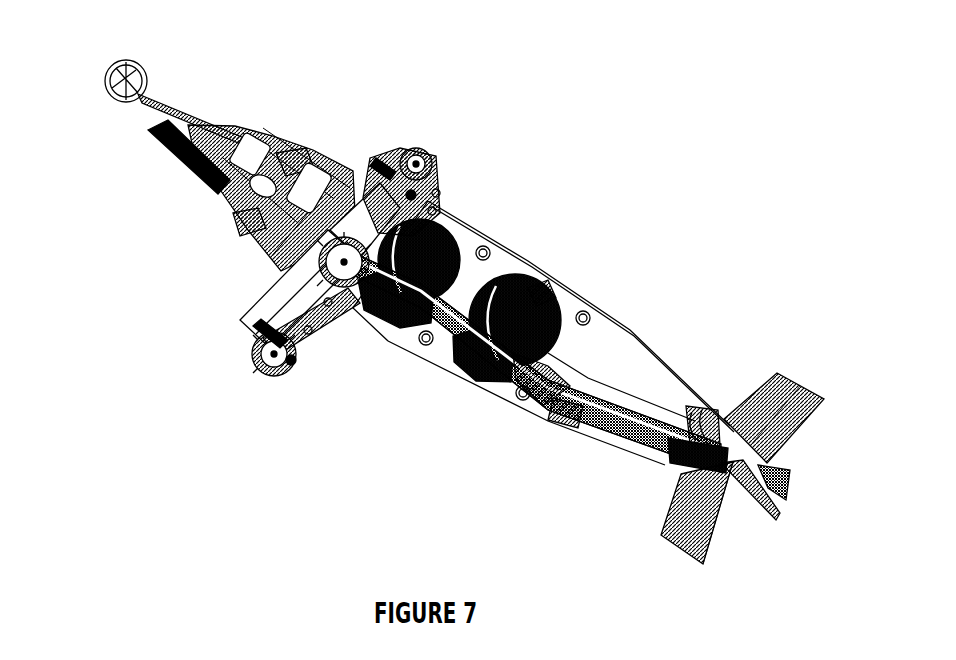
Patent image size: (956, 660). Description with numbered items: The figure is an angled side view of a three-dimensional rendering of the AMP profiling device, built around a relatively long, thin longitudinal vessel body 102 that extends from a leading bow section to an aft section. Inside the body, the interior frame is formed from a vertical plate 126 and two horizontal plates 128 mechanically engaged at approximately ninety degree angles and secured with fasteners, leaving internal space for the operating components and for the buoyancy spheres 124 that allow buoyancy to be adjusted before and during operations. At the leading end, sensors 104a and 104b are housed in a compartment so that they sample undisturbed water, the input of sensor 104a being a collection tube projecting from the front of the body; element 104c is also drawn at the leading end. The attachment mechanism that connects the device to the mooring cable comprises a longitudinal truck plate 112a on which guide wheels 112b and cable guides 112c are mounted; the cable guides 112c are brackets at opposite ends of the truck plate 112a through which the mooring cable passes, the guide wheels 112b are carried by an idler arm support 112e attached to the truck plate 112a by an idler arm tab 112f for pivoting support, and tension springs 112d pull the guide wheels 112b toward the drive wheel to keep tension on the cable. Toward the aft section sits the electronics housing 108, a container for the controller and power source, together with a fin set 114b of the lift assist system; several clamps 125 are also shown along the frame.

The longitudinal vessel body 102 is at (632, 300).
The sensor 104a is at (215, 183).
The sensor 104b is at (240, 137).
The wheel 104c is at (136, 60).
The electronics housing 108 is at (642, 384).
The longitudinal truck plate 112a is at (263, 273).
The guide wheels 112b is at (283, 357).
The cable guides 112c is at (339, 233).
The tension springs 112d is at (377, 158).
The idler arm support 112e is at (302, 326).
The idler arm tab 112f is at (321, 298).
The fin set 114b is at (665, 537).
The buoyancy spheres 124 is at (393, 312).
The clamp 125 is at (283, 157).
The vertical plate 126 is at (567, 300).
The horizontal plate 128 is at (530, 372).